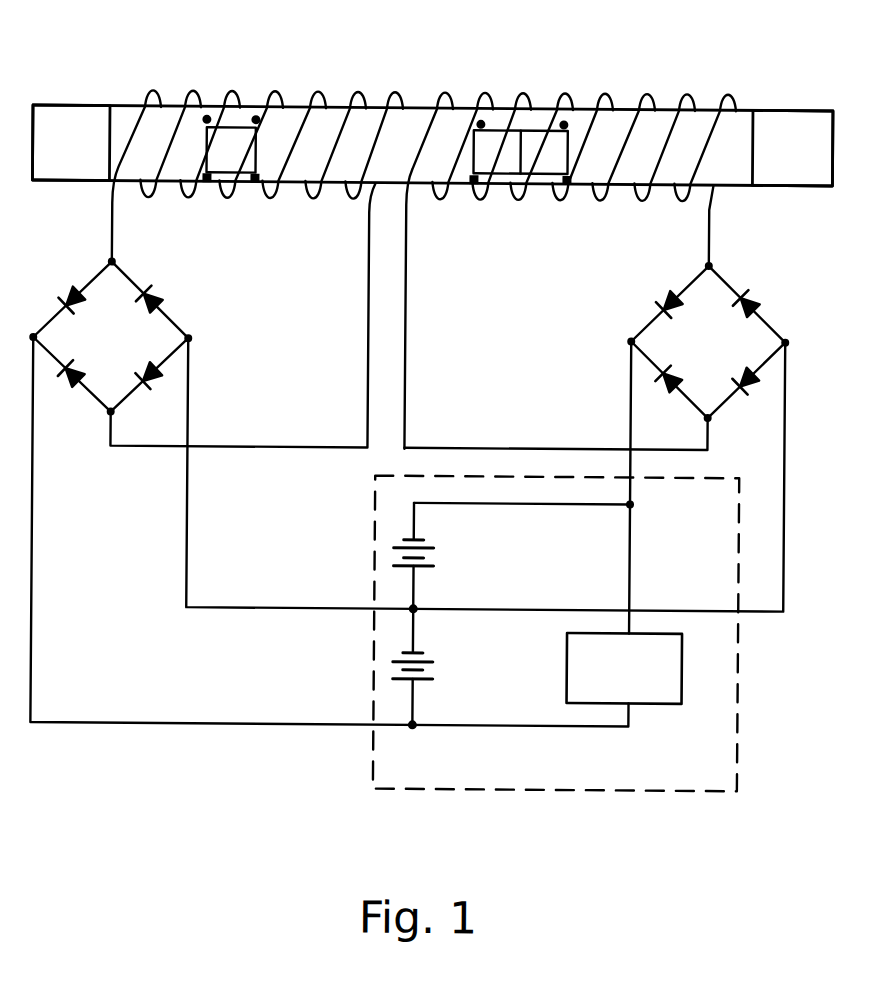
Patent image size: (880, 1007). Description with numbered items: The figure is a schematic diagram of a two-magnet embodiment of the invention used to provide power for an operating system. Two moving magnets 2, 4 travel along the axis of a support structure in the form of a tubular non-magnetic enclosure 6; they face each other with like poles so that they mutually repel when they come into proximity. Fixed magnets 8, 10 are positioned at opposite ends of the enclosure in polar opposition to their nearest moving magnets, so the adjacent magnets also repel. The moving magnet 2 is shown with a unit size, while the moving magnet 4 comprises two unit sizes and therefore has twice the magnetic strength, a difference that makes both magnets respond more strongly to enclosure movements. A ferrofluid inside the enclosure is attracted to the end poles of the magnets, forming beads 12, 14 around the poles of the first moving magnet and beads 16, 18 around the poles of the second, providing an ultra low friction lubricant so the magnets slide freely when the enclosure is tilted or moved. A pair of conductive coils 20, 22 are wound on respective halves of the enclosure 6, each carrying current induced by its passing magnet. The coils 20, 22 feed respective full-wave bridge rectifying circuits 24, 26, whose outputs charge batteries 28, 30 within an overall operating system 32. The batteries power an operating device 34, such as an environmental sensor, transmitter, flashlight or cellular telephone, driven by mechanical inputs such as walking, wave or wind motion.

The moving magnet 2 is at (254, 116).
The moving magnet 4 is at (522, 128).
The tubular non-magnetic enclosure 6 is at (426, 104).
The fixed magnet 8 is at (76, 108).
The fixed magnet 10 is at (792, 100).
The ferrofluid bead 12 is at (207, 114).
The ferrofluid bead 14 is at (268, 110).
The ferrofluid bead 16 is at (482, 120).
The ferrofluid bead 18 is at (566, 120).
The conductive coil 20 is at (156, 96).
The conductive coil 22 is at (730, 92).
The full-wave bridge rectifying circuit 24 is at (96, 352).
The full-wave bridge rectifying circuit 26 is at (693, 353).
The battery 28 is at (452, 662).
The battery 30 is at (452, 553).
The operating system 32 is at (742, 668).
The operating device 34 is at (676, 700).